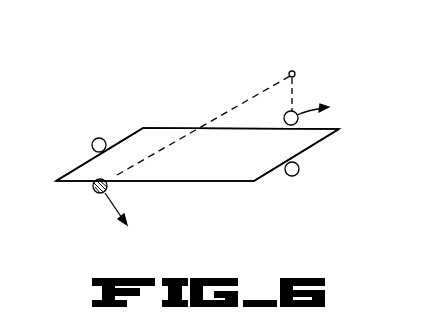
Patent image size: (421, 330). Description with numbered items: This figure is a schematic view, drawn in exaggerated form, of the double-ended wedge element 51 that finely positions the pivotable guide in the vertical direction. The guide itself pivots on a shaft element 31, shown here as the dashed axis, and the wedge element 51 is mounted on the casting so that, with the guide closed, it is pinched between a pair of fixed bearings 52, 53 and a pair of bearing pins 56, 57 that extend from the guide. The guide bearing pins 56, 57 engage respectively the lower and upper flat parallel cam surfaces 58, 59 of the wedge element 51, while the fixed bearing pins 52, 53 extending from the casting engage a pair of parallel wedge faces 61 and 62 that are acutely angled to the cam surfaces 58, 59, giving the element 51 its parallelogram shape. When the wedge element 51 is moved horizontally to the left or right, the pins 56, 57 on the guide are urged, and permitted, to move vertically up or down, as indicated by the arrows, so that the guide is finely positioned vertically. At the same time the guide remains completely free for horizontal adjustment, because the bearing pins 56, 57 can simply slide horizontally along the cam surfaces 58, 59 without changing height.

The shaft element 31 is at (294, 71).
The double-ended wedge element 51 is at (177, 129).
The fixed bearing 52 is at (99, 138).
The fixed bearing 53 is at (299, 170).
The bearing pin 56 is at (92, 191).
The bearing pin 57 is at (297, 112).
The lower flat cam surface 58 is at (178, 181).
The upper flat cam surface 59 is at (260, 129).
The wedge face 61 is at (85, 163).
The wedge face 62 is at (270, 176).